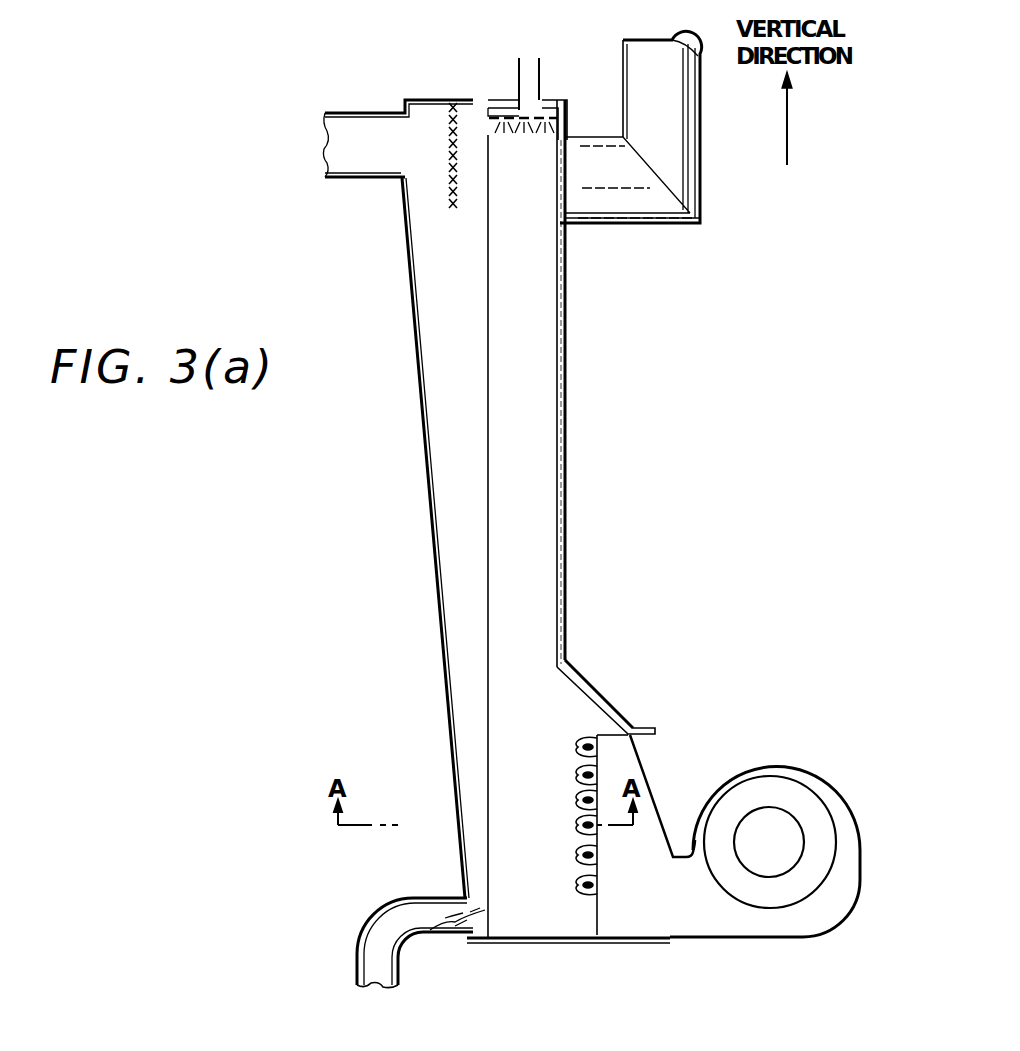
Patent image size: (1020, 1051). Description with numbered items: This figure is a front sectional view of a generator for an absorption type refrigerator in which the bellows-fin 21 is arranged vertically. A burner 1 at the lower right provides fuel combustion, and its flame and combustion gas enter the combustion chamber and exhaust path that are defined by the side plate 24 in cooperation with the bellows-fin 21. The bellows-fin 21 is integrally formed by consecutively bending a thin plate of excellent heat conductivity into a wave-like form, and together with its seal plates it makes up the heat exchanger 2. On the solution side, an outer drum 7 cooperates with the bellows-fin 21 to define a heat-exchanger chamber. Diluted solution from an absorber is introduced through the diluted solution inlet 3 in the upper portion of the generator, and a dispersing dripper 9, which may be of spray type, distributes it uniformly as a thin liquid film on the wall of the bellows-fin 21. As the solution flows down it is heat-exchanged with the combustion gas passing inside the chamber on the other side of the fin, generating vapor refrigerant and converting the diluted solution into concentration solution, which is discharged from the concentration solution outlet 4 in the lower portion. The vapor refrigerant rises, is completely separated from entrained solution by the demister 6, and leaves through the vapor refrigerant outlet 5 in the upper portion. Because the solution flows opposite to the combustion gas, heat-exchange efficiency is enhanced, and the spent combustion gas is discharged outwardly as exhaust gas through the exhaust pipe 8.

The burner 1 is at (806, 776).
The heat exchanger 2 is at (558, 598).
The diluted solution inlet 3 is at (520, 92).
The concentration solution outlet 4 is at (357, 962).
The vapor refrigerant outlet 5 is at (366, 114).
The demister 6 is at (450, 172).
The outer drum 7 is at (428, 522).
The exhaust pipe 8 is at (693, 151).
The dispersing dripper 9 is at (520, 112).
The bellows-fin 21 is at (537, 553).
The side plate 24 is at (565, 458).